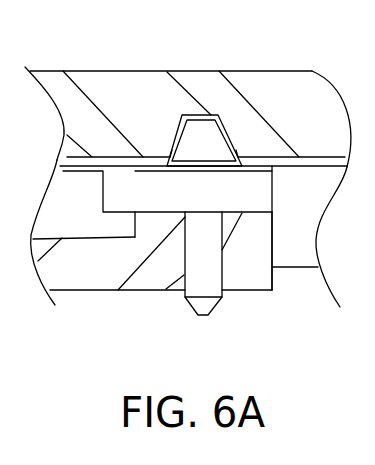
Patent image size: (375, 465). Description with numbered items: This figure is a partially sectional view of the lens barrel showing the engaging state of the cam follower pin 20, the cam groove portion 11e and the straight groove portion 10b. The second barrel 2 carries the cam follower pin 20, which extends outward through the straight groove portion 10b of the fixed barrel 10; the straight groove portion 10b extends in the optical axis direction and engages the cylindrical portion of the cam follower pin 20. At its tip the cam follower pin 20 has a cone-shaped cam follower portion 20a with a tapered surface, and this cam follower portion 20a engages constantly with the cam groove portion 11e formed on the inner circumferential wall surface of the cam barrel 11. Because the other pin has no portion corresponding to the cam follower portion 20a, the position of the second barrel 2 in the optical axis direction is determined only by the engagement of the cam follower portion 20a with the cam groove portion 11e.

The cam barrel 11 is at (98, 71).
The cam groove portion 11e is at (205, 113).
The cam follower portion 20a is at (212, 142).
The cam follower pin 20 is at (183, 298).
The fixed barrel 10 is at (302, 267).
The straight groove portion 10b is at (290, 236).
The second barrel 2 is at (93, 277).